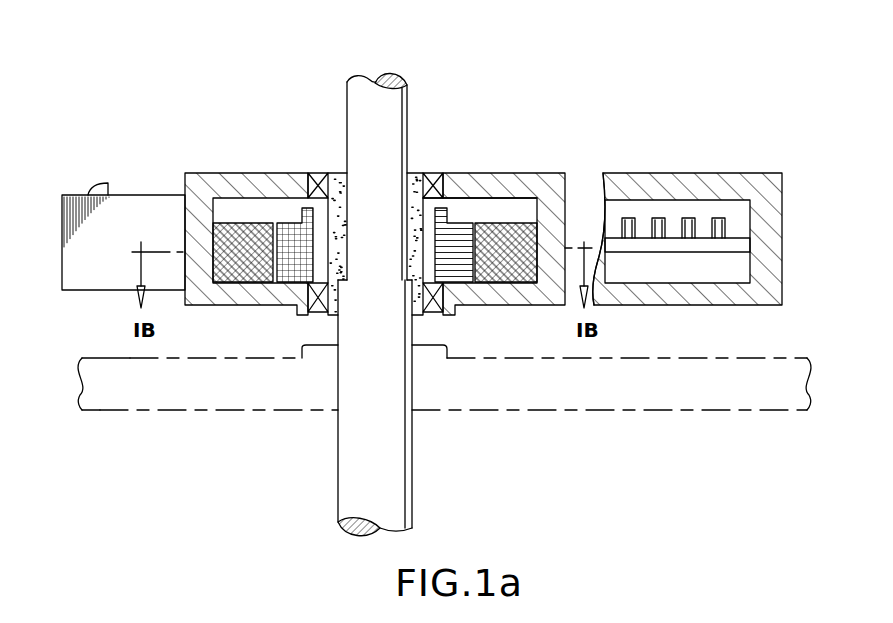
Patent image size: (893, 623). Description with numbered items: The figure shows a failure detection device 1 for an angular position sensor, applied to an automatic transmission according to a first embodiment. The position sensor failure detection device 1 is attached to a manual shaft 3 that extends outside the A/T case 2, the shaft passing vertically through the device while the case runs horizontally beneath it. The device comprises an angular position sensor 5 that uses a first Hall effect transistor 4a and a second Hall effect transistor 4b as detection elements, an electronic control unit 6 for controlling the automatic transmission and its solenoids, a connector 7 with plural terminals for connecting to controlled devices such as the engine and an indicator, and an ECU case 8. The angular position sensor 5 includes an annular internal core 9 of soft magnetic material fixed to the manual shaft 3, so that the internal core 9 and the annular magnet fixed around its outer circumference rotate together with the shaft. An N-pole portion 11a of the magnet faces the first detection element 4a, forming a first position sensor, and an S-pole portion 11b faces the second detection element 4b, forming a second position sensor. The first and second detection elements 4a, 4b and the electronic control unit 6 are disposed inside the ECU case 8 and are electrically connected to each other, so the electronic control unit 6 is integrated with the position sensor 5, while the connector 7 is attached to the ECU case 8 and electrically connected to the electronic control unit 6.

The failure detection device 1 is at (263, 82).
The A/T case 2 is at (647, 412).
The manual shaft 3 is at (390, 110).
The first Hall effect transistor 4a is at (530, 274).
The second Hall effect transistor 4b is at (222, 274).
The angular position sensor 5 is at (472, 216).
The electronic control unit 6 is at (700, 227).
The connector 7 is at (158, 195).
The ECU case 8 is at (248, 178).
The internal core 9 is at (415, 183).
The N-pole portion 11a is at (462, 274).
The S-pole portion 11b is at (284, 274).